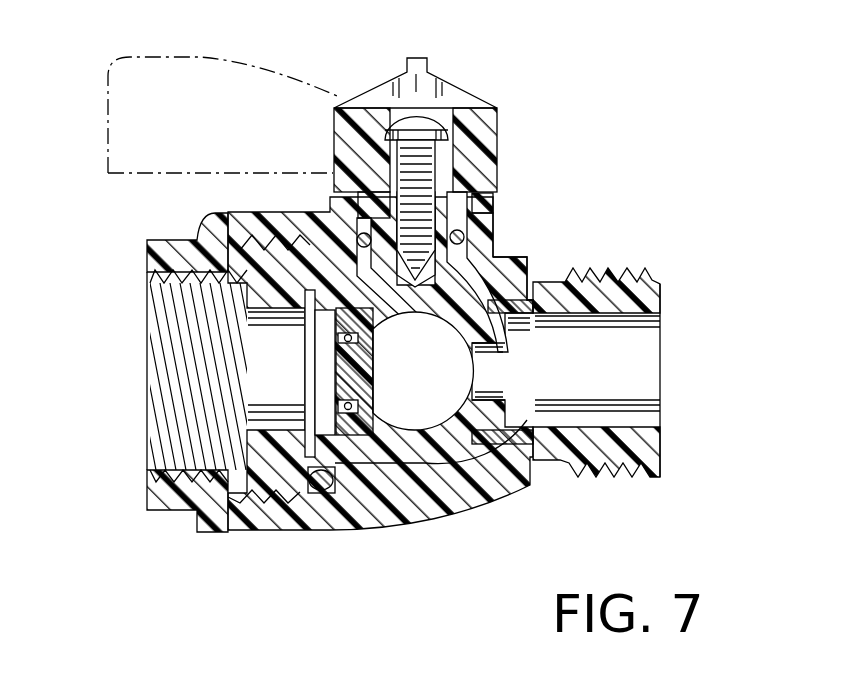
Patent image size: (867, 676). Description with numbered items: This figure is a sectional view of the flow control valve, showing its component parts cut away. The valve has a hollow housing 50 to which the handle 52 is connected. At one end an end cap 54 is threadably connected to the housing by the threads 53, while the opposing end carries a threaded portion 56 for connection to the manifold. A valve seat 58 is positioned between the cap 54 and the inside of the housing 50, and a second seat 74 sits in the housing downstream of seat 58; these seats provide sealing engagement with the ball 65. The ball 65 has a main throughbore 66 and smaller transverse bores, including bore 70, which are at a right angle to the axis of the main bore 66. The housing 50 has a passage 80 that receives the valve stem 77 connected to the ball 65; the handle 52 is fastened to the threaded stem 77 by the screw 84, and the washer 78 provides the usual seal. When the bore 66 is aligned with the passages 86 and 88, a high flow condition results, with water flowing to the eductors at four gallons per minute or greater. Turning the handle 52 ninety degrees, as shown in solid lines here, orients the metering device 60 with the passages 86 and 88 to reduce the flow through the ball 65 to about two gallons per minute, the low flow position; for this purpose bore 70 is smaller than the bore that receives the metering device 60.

The housing 50 is at (500, 493).
The handle 52 is at (393, 72).
The threads 53 is at (286, 495).
The end cap 54 is at (160, 240).
The threaded portion 56 is at (645, 283).
The valve seat 58 is at (333, 497).
The metering device 60 is at (372, 366).
The ball 65 is at (433, 462).
The main throughbore 66 is at (446, 404).
The bore 70 is at (490, 373).
The second seat 74 is at (533, 300).
The valve stem 77 is at (490, 258).
The washer 78 is at (497, 185).
The passage 80 is at (487, 220).
The screw 84 is at (430, 122).
The passage 86 is at (262, 415).
The passage 88 is at (660, 389).